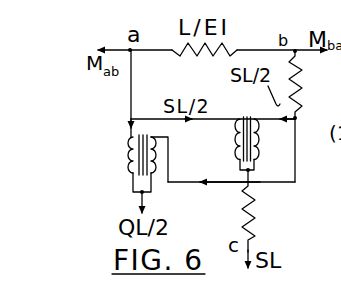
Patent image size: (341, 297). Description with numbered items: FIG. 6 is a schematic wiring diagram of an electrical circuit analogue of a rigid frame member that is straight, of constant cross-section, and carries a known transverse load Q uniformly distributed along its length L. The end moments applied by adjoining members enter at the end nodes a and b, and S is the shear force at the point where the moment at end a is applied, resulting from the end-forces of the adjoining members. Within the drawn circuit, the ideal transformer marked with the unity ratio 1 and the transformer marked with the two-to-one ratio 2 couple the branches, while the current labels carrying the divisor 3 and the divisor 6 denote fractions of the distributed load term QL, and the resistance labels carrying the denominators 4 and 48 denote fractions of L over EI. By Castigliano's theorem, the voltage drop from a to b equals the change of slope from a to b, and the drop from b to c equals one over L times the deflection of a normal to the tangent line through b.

The 1:1 ideal transformer 1 is at (248, 140).
The 2:1 ideal transformer 2 is at (126, 174).
The QL/3 current branch 3 is at (223, 174).
The L/4EI resistor 4 is at (333, 82).
The QL/6 current branch 6 is at (113, 132).
The L/48EI resistor 48 is at (290, 209).